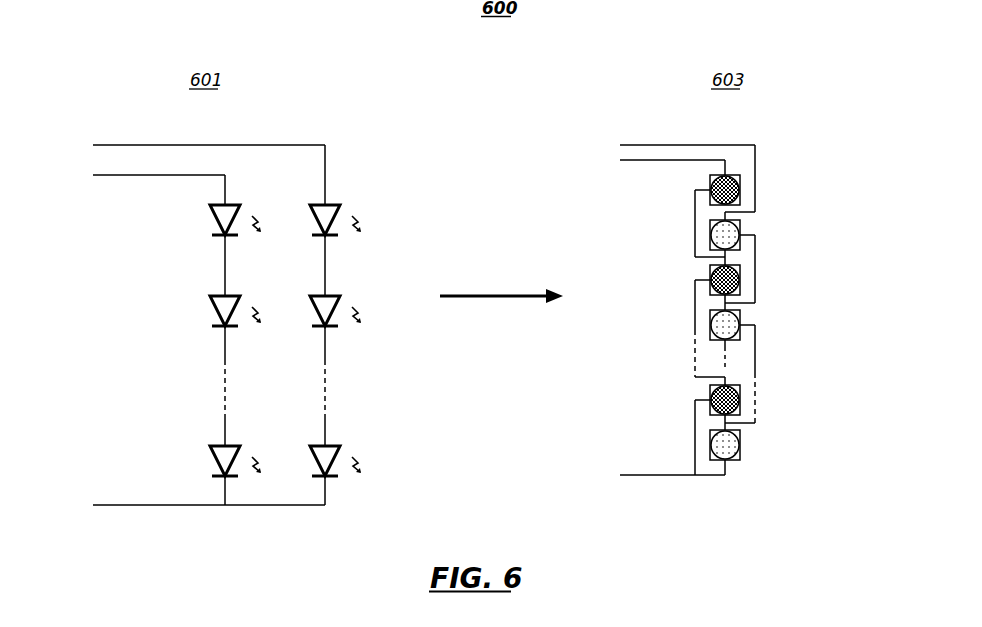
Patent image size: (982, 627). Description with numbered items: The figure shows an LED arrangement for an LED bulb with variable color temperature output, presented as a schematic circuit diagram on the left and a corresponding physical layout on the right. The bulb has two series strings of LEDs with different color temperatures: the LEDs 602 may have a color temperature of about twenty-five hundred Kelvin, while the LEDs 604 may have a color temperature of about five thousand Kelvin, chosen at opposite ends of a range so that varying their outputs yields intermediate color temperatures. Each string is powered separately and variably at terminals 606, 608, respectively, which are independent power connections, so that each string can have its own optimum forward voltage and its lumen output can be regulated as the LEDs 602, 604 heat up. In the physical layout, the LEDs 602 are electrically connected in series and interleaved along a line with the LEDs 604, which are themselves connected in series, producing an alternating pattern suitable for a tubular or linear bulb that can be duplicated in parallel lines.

The LEDs 602 is at (214, 212).
The LEDs 604 is at (340, 207).
The terminal 606 is at (113, 175).
The terminal 608 is at (108, 145).